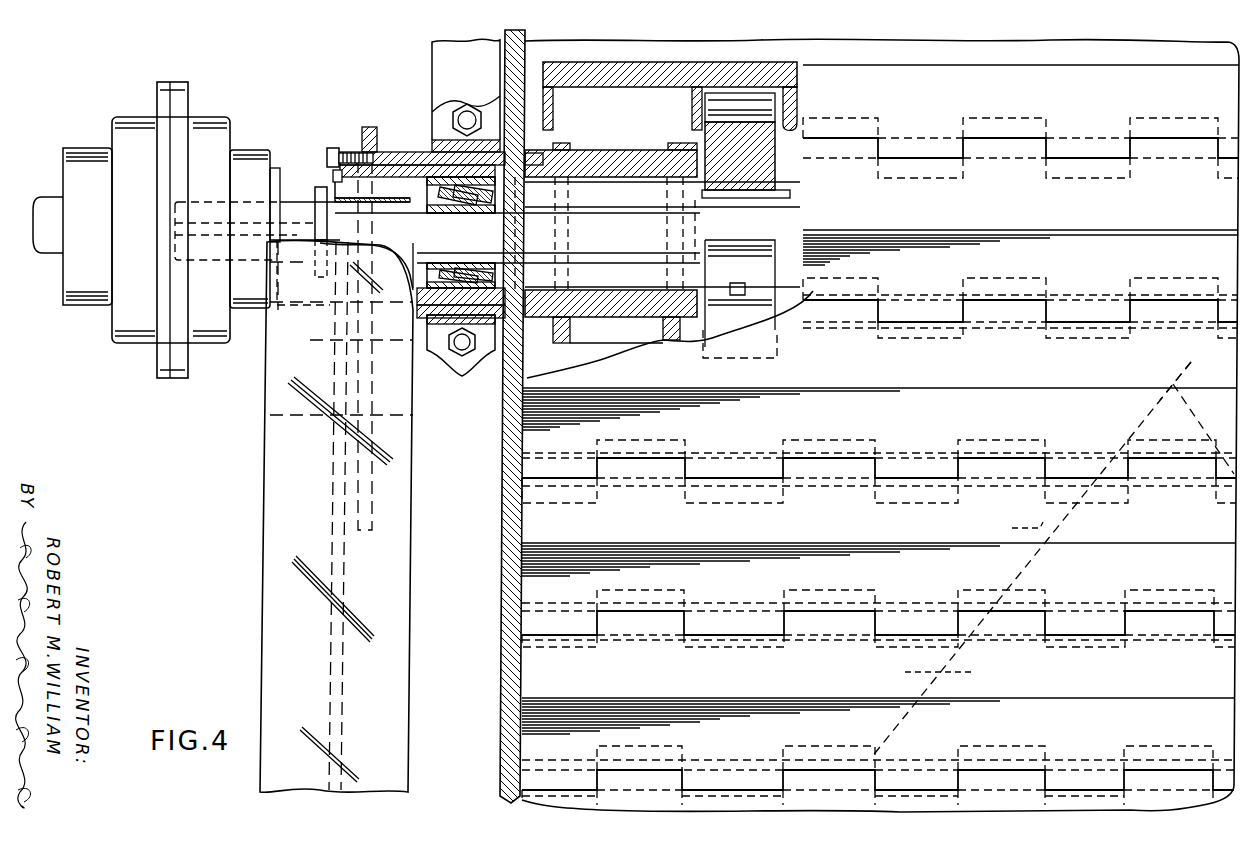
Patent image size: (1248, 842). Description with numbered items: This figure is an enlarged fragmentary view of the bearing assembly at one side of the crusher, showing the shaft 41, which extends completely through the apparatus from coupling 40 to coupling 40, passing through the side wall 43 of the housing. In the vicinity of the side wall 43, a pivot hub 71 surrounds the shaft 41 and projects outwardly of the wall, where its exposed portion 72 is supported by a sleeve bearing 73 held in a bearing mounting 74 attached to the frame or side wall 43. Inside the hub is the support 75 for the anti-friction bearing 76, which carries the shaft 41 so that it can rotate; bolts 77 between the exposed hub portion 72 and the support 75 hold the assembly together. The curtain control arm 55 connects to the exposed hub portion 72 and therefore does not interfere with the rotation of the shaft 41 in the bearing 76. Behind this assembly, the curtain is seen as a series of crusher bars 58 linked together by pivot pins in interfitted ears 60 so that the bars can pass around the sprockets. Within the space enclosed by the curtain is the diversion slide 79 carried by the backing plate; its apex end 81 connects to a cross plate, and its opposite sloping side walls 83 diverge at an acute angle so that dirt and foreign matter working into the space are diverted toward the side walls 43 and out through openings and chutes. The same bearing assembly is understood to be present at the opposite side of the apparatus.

The coupling 40 is at (138, 117).
The shaft 41 is at (296, 200).
The side wall 43 is at (505, 478).
The curtain control arm 55 is at (265, 560).
The crusher bar 58 is at (1092, 80).
The interfitted ear 60 is at (997, 145).
The pivot hub 71 is at (604, 150).
The exposed portion of hub 72 is at (394, 152).
The sleeve bearing 73 is at (425, 150).
The bearing mounting 74 is at (458, 100).
The support 75 is at (403, 188).
The anti-friction bearing 76 is at (450, 212).
The bolt 77 is at (332, 148).
The diversion slide 79 is at (924, 673).
The apex end 81 is at (1186, 369).
The sloping side wall 83 is at (1017, 519).